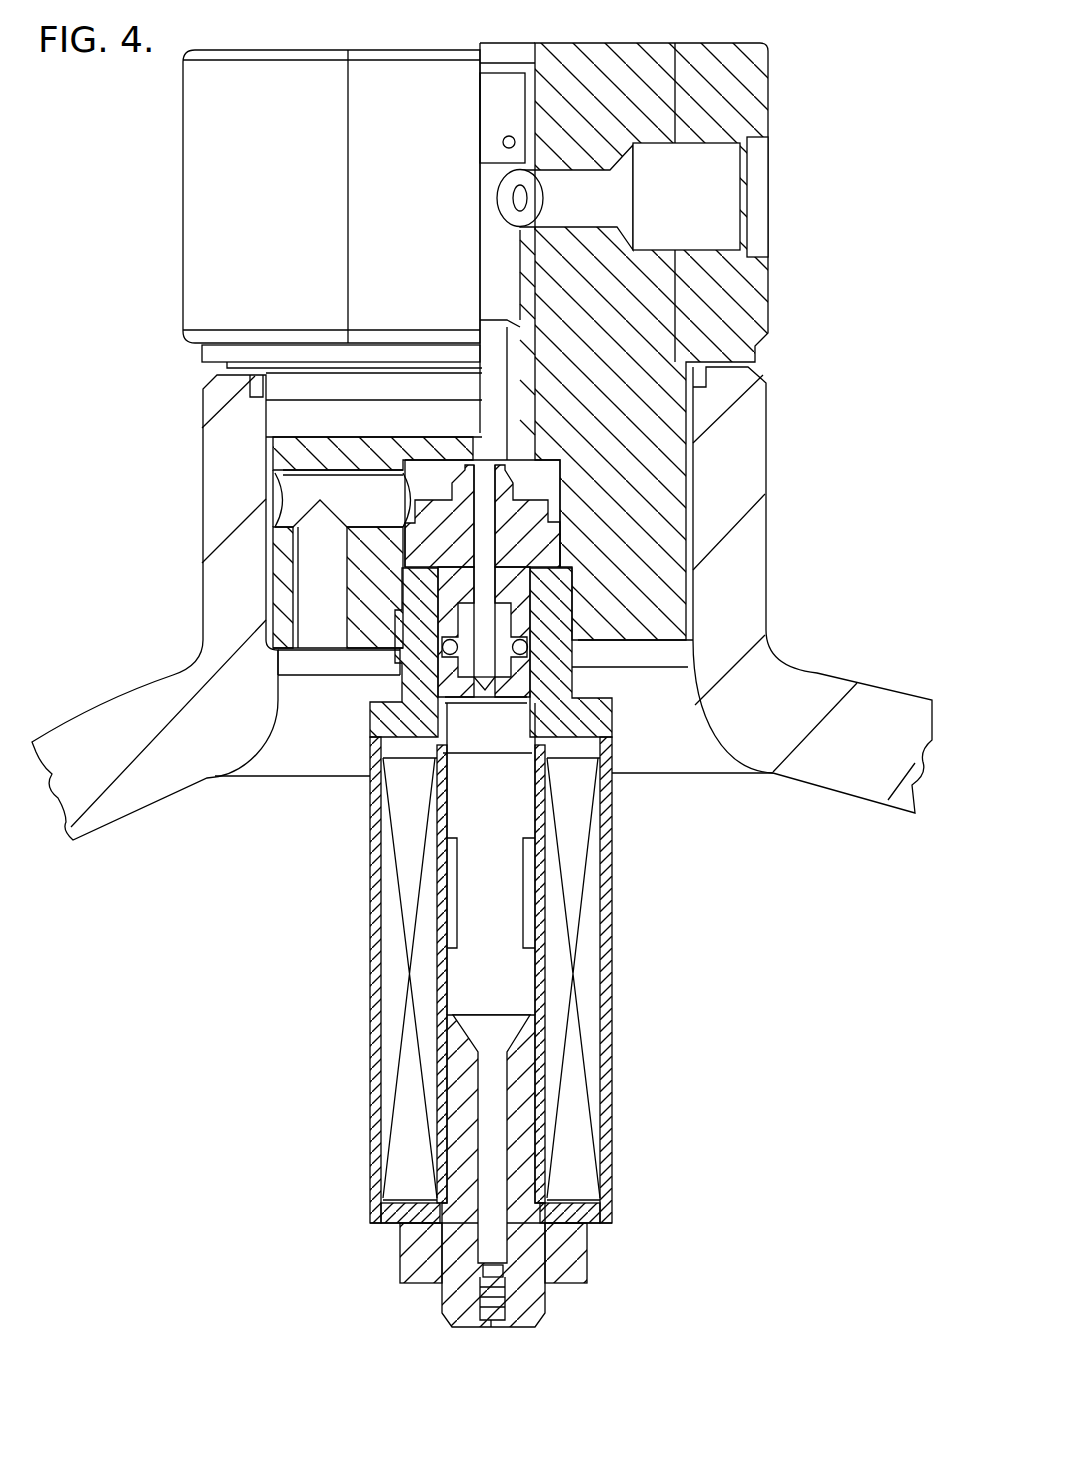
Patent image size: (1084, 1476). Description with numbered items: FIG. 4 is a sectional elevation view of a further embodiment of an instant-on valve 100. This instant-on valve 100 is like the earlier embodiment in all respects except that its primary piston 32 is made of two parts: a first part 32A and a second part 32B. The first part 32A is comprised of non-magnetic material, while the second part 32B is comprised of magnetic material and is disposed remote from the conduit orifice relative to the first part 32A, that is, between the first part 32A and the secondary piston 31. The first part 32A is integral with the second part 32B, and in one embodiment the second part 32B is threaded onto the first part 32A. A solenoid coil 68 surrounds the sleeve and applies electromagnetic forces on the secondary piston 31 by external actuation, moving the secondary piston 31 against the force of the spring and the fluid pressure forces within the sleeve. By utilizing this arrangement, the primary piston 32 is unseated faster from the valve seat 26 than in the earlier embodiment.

The instant-on valve 100 is at (371, 84).
The valve seat 26 is at (515, 458).
The primary piston 32 is at (512, 590).
The first part 32A is at (537, 543).
The second part 32B is at (558, 657).
The secondary piston 31 is at (512, 898).
The solenoid coil 68 is at (590, 1018).